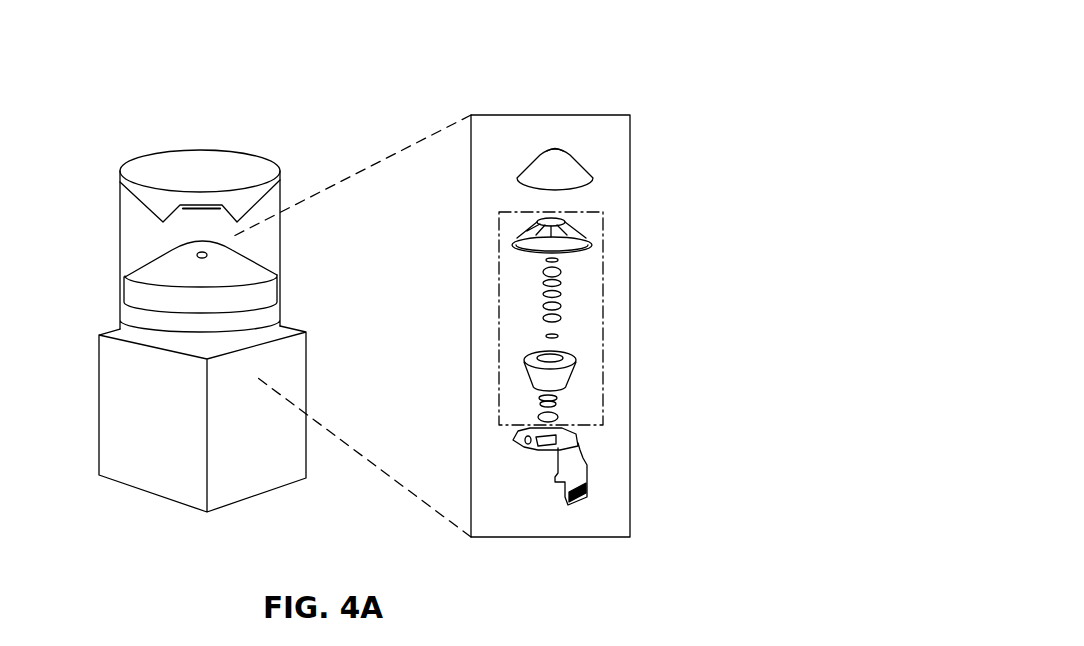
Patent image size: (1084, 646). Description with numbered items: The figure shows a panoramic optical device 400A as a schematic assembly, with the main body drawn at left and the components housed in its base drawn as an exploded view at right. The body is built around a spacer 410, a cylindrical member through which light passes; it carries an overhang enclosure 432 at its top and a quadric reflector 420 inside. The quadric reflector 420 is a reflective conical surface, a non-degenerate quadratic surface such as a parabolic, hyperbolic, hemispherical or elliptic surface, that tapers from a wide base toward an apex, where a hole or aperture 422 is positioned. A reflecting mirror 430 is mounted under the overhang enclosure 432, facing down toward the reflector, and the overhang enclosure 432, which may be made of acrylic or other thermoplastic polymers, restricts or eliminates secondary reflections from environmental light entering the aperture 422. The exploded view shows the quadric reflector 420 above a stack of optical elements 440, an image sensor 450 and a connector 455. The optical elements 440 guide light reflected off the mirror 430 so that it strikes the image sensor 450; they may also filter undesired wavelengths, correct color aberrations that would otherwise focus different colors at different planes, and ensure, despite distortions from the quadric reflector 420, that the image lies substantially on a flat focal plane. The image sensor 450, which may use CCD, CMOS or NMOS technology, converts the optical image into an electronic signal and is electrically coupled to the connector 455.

The camera assembly 400A is at (798, 38).
The spacer 410 is at (120, 228).
The quadric reflector 420 is at (243, 263).
The aperture 422 is at (573, 103).
The reflecting mirror 430 is at (197, 205).
The overhang enclosure 432 is at (180, 149).
The optical elements 440 is at (499, 270).
The image sensor 450 is at (518, 446).
The connector 455 is at (550, 487).